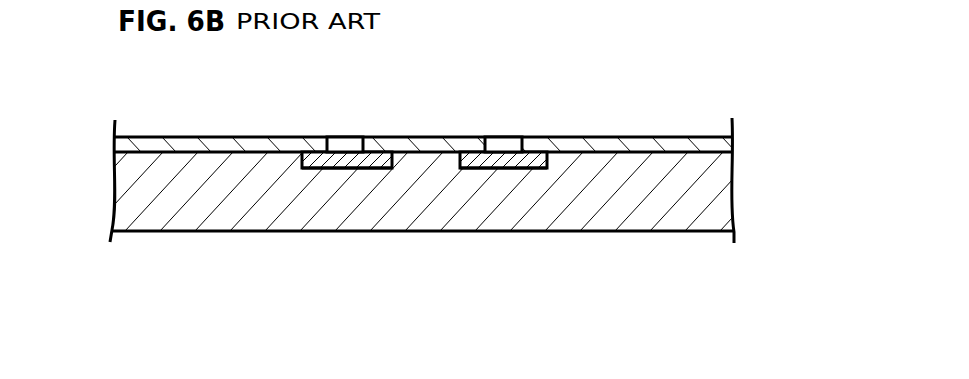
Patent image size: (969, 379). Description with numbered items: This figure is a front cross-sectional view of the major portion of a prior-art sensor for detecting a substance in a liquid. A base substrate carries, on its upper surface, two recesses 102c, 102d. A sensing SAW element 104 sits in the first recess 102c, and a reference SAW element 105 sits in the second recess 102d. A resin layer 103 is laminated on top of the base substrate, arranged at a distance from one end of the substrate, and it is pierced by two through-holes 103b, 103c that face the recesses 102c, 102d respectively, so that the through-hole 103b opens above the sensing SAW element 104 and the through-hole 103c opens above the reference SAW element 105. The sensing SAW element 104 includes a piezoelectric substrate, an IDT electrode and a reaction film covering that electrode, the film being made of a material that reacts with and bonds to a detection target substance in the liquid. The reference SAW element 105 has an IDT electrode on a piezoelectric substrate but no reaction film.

The resin layer 103 is at (682, 135).
The through-hole 103b is at (348, 139).
The through-hole 103c is at (503, 137).
The sensing SAW element 104 is at (367, 160).
The reference SAW element 105 is at (525, 160).
The recess 102c is at (343, 169).
The recess 102d is at (503, 169).